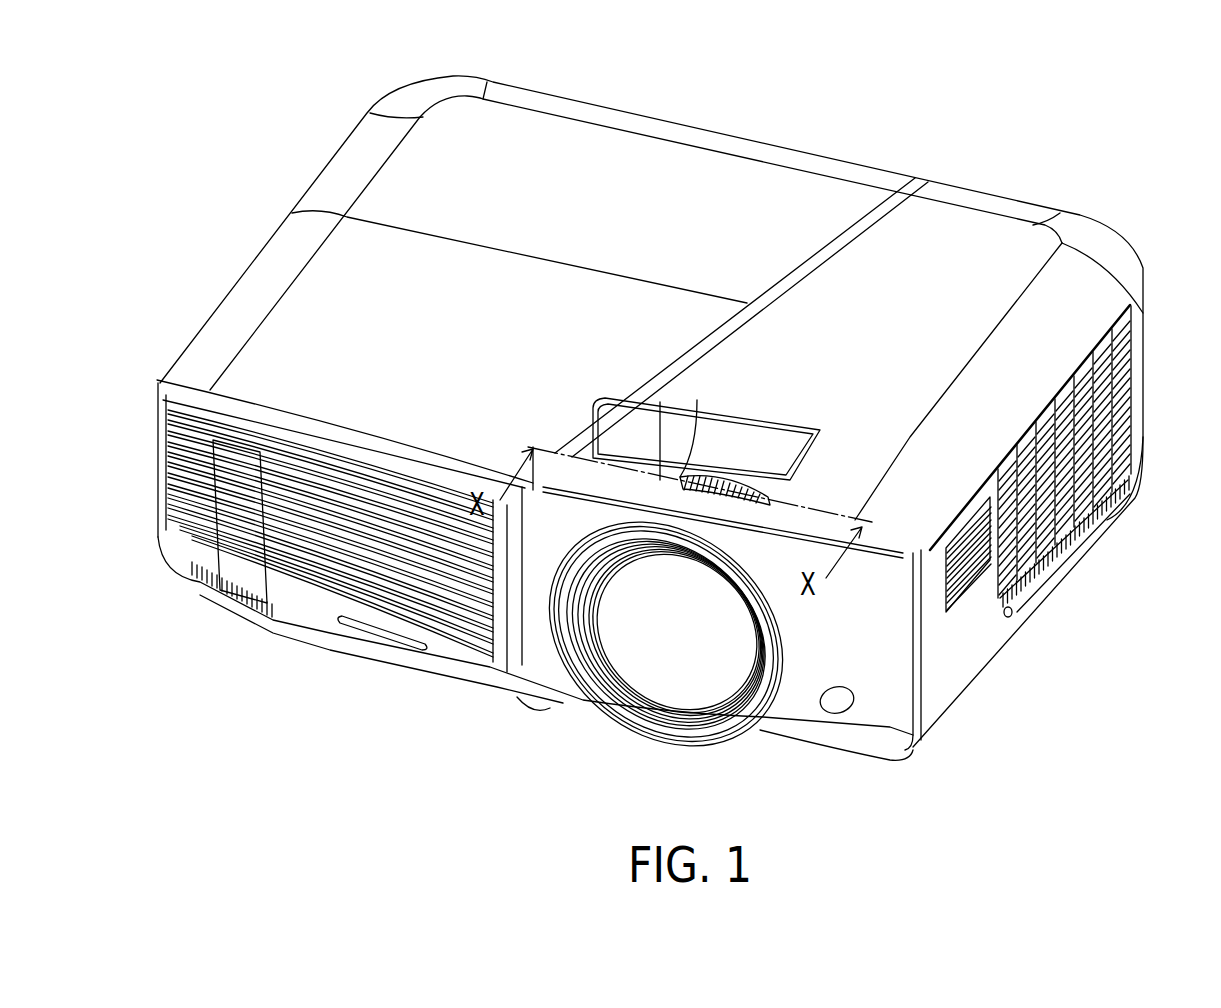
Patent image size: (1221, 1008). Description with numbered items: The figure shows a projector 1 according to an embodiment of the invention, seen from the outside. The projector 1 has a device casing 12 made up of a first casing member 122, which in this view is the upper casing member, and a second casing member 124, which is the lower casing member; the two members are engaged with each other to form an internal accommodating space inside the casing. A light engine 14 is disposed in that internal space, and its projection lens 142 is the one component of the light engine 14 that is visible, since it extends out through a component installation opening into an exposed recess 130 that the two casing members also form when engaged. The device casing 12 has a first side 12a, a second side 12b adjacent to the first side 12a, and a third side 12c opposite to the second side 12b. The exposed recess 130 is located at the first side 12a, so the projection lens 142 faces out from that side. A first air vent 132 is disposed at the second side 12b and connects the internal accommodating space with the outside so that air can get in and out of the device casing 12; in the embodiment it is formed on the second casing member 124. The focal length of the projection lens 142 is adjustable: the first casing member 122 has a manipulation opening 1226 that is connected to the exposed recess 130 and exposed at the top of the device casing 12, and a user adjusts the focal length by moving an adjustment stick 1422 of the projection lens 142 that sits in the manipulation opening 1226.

The projector 1 is at (1080, 112).
The device casing 12 is at (1172, 558).
The first side 12a is at (428, 684).
The second side 12b is at (1018, 640).
The third side 12c is at (180, 342).
The first casing member 122 is at (977, 438).
The second casing member 124 is at (997, 598).
The exposed recess 130 is at (663, 730).
The first air vent 132 is at (967, 603).
The light engine 14 is at (666, 645).
The projection lens 142 is at (660, 653).
The adjustment stick 1422 is at (684, 476).
The manipulation opening 1226 is at (760, 437).